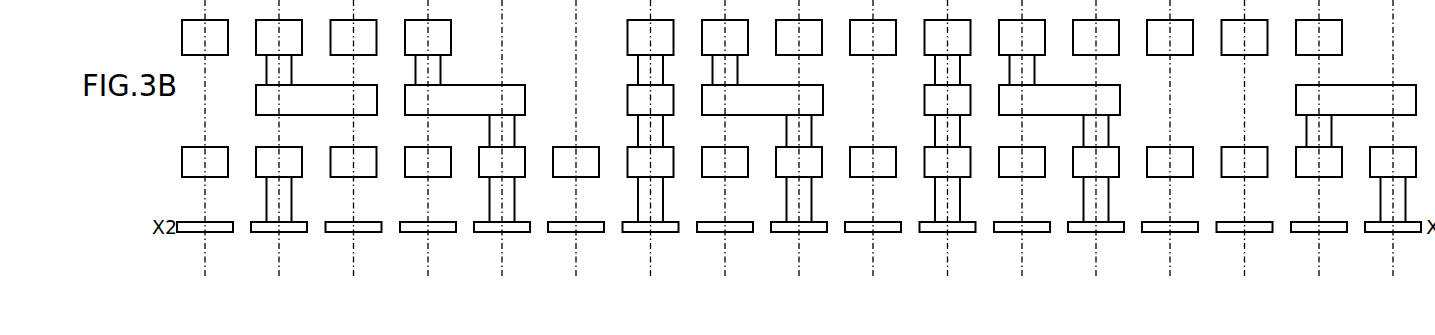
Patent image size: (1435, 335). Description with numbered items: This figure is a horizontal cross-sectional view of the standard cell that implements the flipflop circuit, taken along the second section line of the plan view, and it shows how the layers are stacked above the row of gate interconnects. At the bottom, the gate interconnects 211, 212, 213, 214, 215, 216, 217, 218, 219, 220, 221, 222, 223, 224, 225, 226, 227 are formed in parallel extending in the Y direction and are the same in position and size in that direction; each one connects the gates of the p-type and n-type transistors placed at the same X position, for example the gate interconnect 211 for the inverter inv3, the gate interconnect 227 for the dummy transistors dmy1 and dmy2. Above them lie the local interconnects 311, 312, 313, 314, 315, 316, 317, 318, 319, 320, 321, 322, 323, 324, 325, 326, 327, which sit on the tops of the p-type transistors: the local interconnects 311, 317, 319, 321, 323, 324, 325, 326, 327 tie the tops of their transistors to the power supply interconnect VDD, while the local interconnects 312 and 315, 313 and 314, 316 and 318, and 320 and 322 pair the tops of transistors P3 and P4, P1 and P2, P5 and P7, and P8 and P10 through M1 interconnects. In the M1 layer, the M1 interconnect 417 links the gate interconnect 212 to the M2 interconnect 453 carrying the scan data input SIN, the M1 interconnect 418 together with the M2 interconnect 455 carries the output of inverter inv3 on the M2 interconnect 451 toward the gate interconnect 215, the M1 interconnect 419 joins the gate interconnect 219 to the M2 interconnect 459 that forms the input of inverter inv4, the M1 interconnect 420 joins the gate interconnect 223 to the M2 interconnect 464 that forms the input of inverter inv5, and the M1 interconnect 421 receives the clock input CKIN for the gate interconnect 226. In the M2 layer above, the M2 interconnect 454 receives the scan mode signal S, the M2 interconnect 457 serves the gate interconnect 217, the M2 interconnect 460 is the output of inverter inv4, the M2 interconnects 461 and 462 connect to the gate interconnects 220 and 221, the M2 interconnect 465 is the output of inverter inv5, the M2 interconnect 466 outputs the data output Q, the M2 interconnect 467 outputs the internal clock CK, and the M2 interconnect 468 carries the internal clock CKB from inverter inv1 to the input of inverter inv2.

The gate interconnect 211 is at (220, 233).
The gate interconnect 212 is at (294, 233).
The gate interconnect 213 is at (368, 233).
The gate interconnect 214 is at (443, 233).
The gate interconnect 215 is at (517, 233).
The gate interconnect 216 is at (591, 233).
The gate interconnect 217 is at (666, 233).
The gate interconnect 218 is at (740, 233).
The gate interconnect 219 is at (814, 233).
The gate interconnect 220 is at (888, 233).
The gate interconnect 221 is at (963, 233).
The gate interconnect 222 is at (1037, 233).
The gate interconnect 223 is at (1111, 233).
The gate interconnect 224 is at (1185, 233).
The gate interconnect 225 is at (1260, 233).
The gate interconnect 226 is at (1332, 233).
The gate interconnect 227 is at (1407, 233).
The local interconnect 311 is at (194, 153).
The local interconnect 312 is at (264, 156).
The local interconnect 313 is at (338, 156).
The local interconnect 314 is at (410, 156).
The local interconnect 315 is at (484, 156).
The local interconnect 316 is at (559, 156).
The local interconnect 317 is at (633, 156).
The local interconnect 318 is at (708, 156).
The local interconnect 319 is at (781, 156).
The local interconnect 320 is at (856, 156).
The local interconnect 321 is at (931, 156).
The local interconnect 322 is at (1008, 156).
The local interconnect 323 is at (1082, 156).
The local interconnect 324 is at (1158, 156).
The local interconnect 325 is at (1233, 156).
The local interconnect 326 is at (1305, 156).
The local interconnect 327 is at (1380, 156).
The M1 interconnect 417 is at (299, 96).
The M1 interconnect 418 is at (448, 95).
The M1 interconnect 419 is at (811, 95).
The M1 interconnect 420 is at (1107, 95).
The M1 interconnect 421 is at (1405, 95).
The M2 interconnect 451 is at (195, 25).
The M2 interconnect 453 is at (270, 25).
The M2 interconnect 454 is at (345, 25).
The M2 interconnect 455 is at (419, 25).
The M2 interconnect 457 is at (633, 40).
The M2 interconnect 459 is at (708, 40).
The M2 interconnect 460 is at (783, 40).
The M2 interconnect 461 is at (857, 40).
The M2 interconnect 462 is at (930, 40).
The M2 interconnect 464 is at (1008, 40).
The M2 interconnect 465 is at (1080, 40).
The M2 interconnect 466 is at (1155, 40).
The M2 interconnect 467 is at (1230, 40).
The M2 interconnect 468 is at (1303, 40).